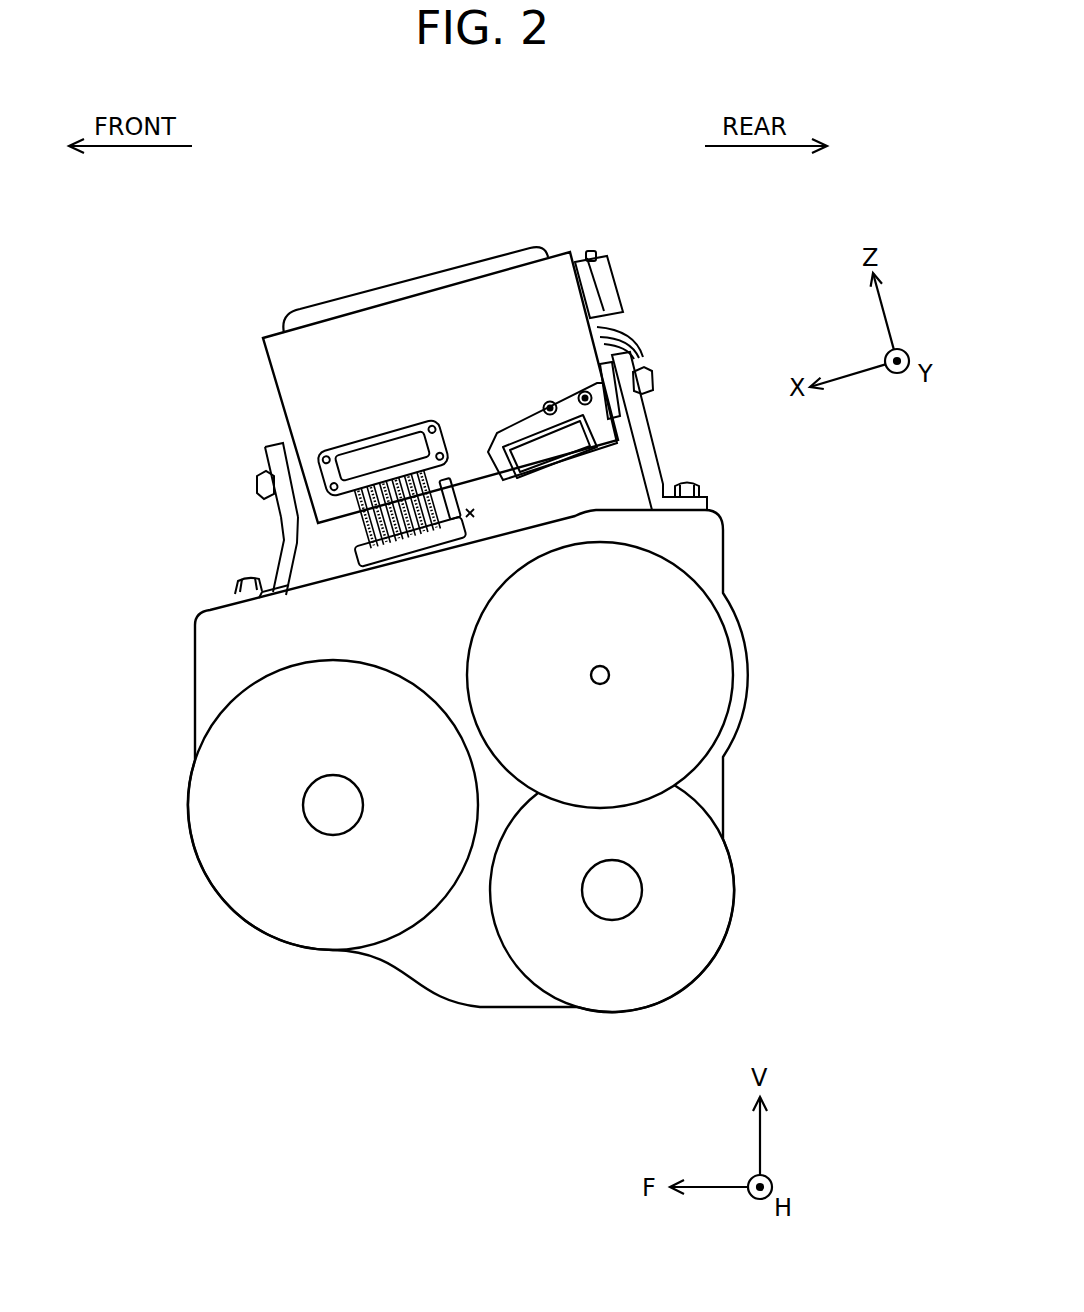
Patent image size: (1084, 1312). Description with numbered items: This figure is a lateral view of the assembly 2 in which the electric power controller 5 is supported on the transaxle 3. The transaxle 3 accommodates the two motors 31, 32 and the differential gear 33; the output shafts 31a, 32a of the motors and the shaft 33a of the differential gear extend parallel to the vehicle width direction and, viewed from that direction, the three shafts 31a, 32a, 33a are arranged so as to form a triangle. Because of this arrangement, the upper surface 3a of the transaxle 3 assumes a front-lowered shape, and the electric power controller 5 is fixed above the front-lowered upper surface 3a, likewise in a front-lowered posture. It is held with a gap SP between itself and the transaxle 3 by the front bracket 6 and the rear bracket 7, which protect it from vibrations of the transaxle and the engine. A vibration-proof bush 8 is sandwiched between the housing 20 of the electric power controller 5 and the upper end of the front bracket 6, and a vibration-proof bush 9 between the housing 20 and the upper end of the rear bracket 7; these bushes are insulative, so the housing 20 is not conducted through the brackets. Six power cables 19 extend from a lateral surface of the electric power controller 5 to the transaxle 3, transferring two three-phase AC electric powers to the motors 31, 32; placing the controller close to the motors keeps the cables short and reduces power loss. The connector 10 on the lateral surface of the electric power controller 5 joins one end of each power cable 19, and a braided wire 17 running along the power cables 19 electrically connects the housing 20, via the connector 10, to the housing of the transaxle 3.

The engine unit 2 is at (214, 256).
The transaxle 3 is at (210, 707).
The upper surface 3a is at (217, 607).
The electric power controller 5 is at (416, 320).
The housing 20 is at (415, 290).
The front bracket 6 is at (258, 562).
The rear bracket 7 is at (657, 483).
The vibration-proof bush 8 is at (290, 460).
The vibration-proof bush 9 is at (630, 430).
The connector 10 is at (369, 453).
The braided wire 17 is at (365, 548).
The power cables 19 is at (357, 562).
The gap SP is at (472, 522).
The motor 31 is at (247, 903).
The output shaft 31a is at (328, 817).
The motor 32 is at (697, 705).
The output shaft 32a is at (606, 672).
The differential gear 33 is at (707, 892).
The shaft 33a is at (617, 882).